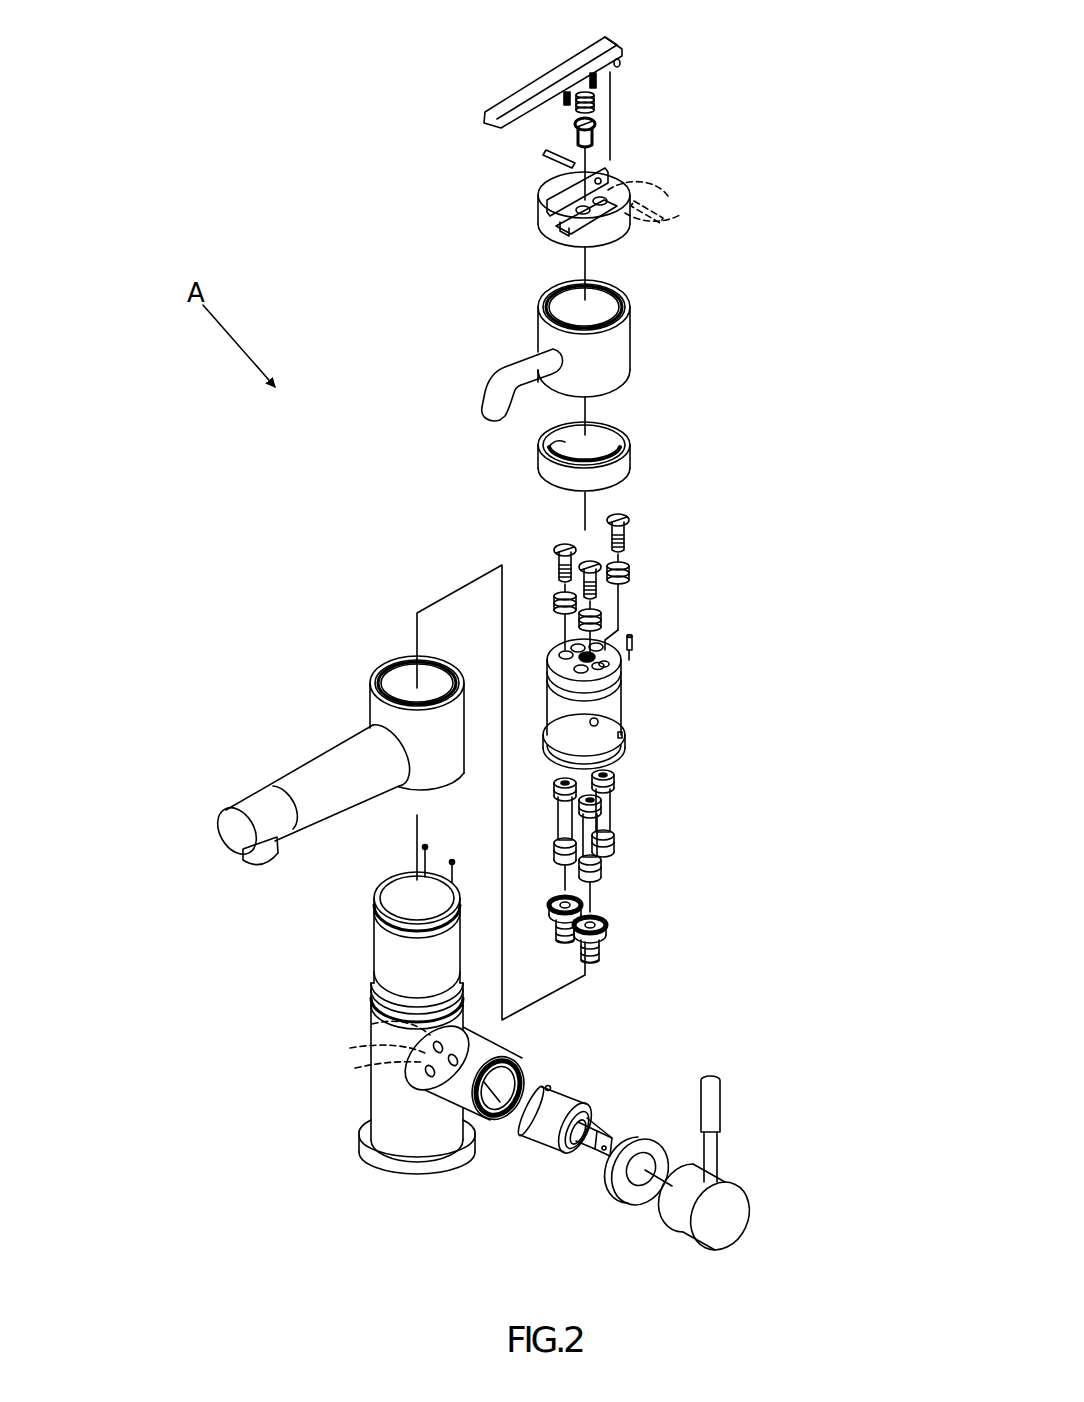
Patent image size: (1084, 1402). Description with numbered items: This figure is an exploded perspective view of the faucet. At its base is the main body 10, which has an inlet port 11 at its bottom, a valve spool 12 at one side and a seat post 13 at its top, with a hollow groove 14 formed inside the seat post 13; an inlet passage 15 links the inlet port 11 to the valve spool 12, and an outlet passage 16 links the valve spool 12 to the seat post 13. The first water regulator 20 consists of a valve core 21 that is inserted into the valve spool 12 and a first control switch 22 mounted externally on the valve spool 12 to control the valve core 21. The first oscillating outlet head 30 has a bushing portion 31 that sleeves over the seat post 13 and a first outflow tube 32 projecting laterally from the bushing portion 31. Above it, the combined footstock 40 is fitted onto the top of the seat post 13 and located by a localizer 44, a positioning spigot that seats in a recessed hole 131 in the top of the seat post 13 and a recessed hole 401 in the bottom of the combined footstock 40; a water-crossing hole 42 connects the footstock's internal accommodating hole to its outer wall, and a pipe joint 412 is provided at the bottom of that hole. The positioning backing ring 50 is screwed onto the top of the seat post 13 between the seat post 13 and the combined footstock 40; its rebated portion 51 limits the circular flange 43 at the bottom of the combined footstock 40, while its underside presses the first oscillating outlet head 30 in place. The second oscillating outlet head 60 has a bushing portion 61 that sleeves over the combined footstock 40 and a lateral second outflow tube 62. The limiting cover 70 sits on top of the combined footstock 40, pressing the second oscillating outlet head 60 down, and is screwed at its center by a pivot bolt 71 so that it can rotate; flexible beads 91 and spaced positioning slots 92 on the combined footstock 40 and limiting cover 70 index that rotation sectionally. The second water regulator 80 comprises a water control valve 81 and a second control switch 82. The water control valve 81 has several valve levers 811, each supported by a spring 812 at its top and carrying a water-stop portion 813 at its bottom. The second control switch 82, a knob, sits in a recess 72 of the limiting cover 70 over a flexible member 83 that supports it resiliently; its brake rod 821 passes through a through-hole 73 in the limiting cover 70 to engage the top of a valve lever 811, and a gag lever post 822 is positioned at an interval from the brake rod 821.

The main body 10 is at (372, 1082).
The inlet port 11 is at (400, 1180).
The valve spool 12 is at (502, 1122).
The seat post 13 is at (382, 960).
The hollow groove 14 is at (395, 890).
The inlet passage 15 is at (357, 1065).
The outlet passage 16 is at (372, 1022).
The first water regulator 20 is at (667, 1036).
The valve core 21 is at (580, 1098).
The first control switch 22 is at (703, 1095).
The first oscillating outlet head 30 is at (292, 649).
The bushing portion 31 is at (372, 703).
The first outflow tube 32 is at (312, 757).
The combined footstock 40 is at (622, 692).
The recessed hole 401 is at (626, 736).
The pipe joint 412 is at (612, 880).
The water-crossing hole 42 is at (600, 722).
The circular flange 43 is at (625, 750).
The localizer 44 is at (429, 848).
The recessed hole 131 is at (455, 886).
The positioning backing ring 50 is at (632, 465).
The rebated portion 51 is at (553, 458).
The second oscillating outlet head 60 is at (464, 266).
The bushing portion 61 is at (540, 318).
The second outflow tube 62 is at (492, 380).
The limiting cover 70 is at (628, 232).
The pivot bolt 71 is at (600, 137).
The recess 72 is at (605, 180).
The through-hole 73 is at (648, 205).
The second water regulator 80 is at (700, 42).
The water control valve 81 is at (708, 802).
The valve lever 811 is at (612, 808).
The water-stop portion 813 is at (612, 842).
The spring 812 is at (630, 570).
The second control switch 82 is at (556, 66).
The brake rod 821 is at (615, 71).
The gag lever post 822 is at (558, 100).
The flexible member 83 is at (600, 98).
The flexible bead 91 is at (636, 652).
The positioning slot 92 is at (612, 667).